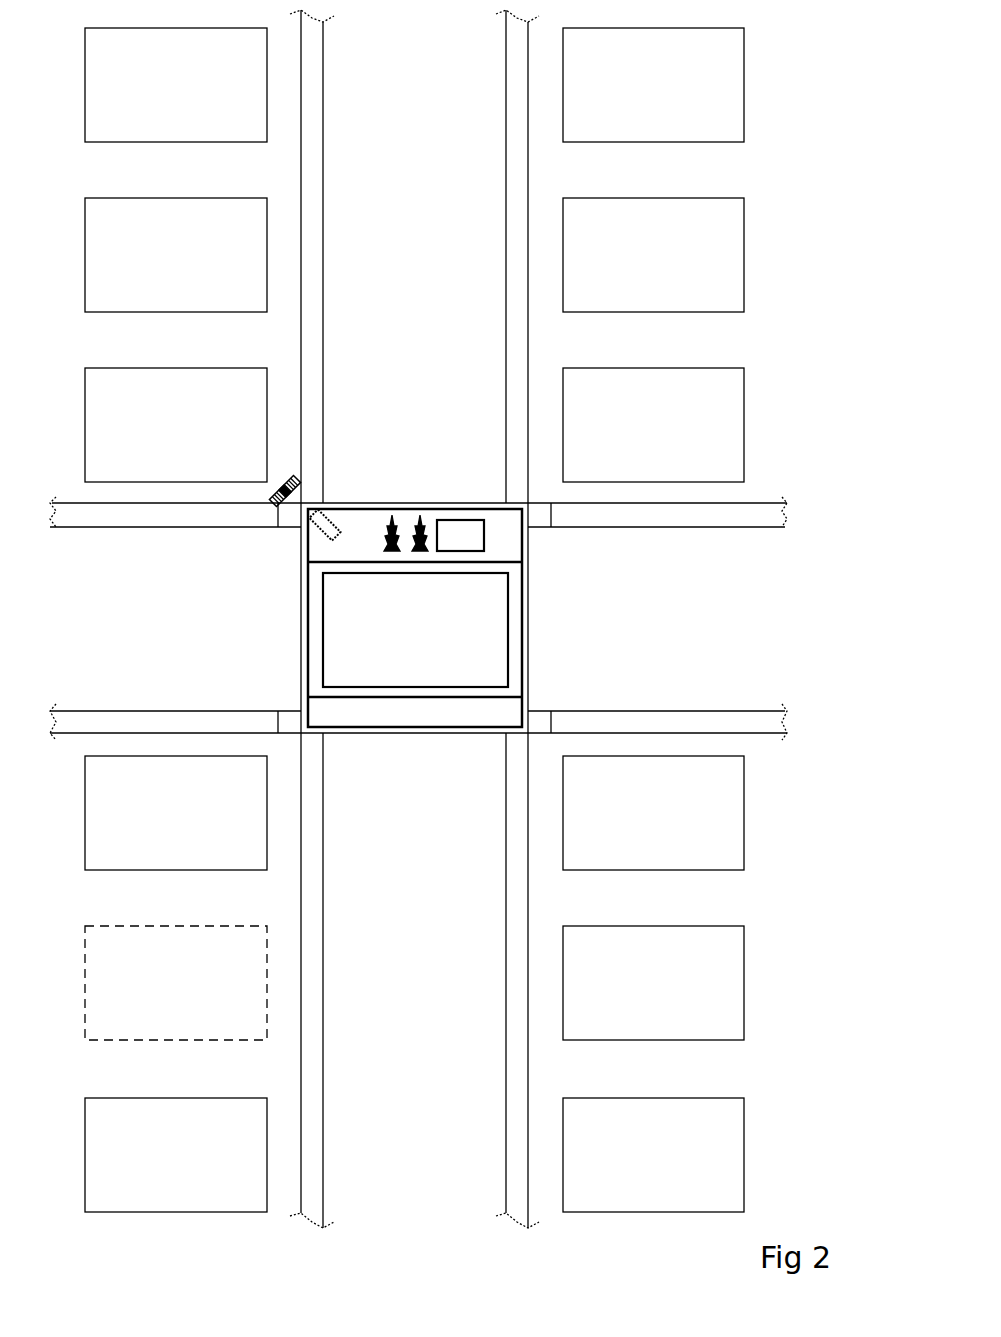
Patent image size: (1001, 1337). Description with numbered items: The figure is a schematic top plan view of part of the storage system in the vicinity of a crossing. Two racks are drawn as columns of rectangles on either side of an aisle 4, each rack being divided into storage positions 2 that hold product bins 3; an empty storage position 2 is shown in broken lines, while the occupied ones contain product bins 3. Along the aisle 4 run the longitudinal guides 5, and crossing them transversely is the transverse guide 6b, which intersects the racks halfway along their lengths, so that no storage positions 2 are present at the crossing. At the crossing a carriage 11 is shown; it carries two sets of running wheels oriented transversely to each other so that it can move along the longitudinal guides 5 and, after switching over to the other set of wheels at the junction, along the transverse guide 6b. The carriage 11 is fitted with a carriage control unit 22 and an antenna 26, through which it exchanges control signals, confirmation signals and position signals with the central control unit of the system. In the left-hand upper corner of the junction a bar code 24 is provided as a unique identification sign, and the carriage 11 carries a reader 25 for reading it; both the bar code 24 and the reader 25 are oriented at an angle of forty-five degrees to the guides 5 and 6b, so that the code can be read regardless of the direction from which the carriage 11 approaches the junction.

The storage position 2 is at (230, 977).
The product bin 3 is at (462, 1150).
The aisle 4 is at (408, 193).
The longitudinal guide 5 is at (315, 140).
The transverse guide 6b is at (95, 516).
The carriage 11 is at (420, 715).
The carriage control unit 22 is at (462, 528).
The bar code 24 is at (283, 485).
The reader 25 is at (322, 528).
The antenna 26 is at (405, 520).